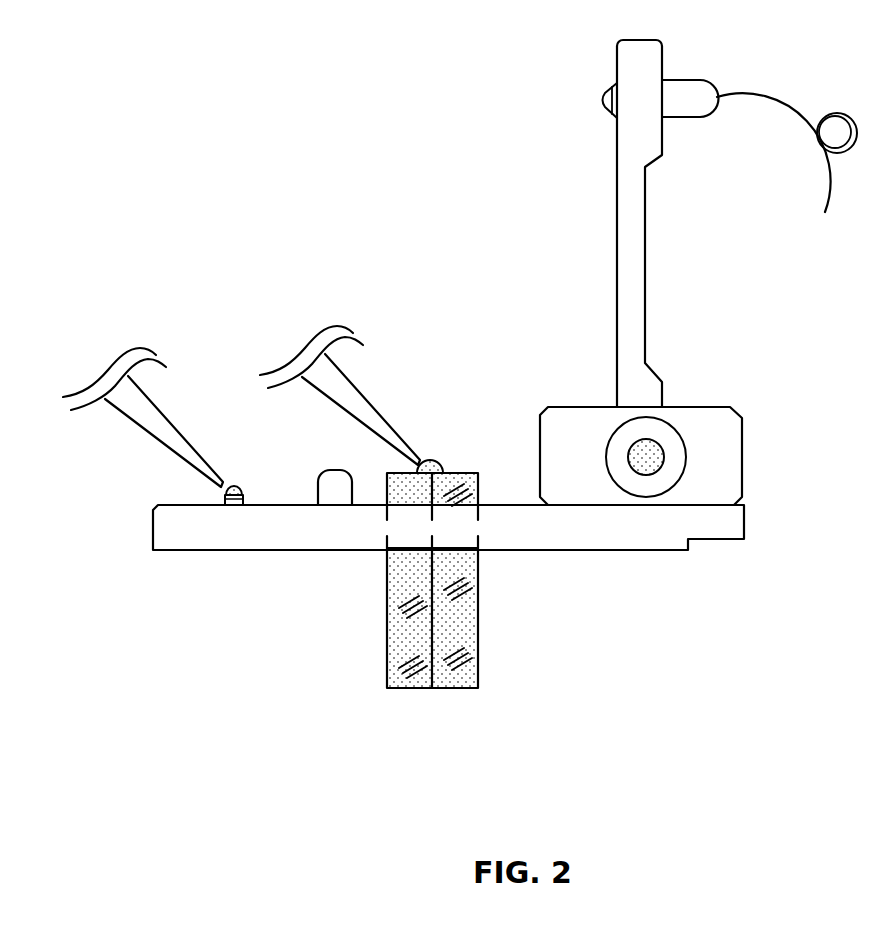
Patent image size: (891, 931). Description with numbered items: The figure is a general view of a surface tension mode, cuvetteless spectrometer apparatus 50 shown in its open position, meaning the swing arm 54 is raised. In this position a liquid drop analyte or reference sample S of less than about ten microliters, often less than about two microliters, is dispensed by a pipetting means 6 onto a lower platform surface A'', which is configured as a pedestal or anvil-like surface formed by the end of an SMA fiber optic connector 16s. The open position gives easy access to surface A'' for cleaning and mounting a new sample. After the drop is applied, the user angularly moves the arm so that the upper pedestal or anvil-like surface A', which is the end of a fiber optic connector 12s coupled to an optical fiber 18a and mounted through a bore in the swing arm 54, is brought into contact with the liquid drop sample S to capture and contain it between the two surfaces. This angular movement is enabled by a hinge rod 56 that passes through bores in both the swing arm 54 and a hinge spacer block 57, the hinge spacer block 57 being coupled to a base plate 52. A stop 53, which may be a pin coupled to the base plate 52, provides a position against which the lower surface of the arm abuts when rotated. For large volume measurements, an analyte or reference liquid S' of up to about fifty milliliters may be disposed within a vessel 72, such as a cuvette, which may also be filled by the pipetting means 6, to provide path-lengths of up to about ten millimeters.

The spectrometer apparatus 50 is at (181, 202).
The pipetting means 6 is at (245, 371).
The SMA fiber optic connector 16s is at (225, 498).
The liquid drop sample S is at (253, 473).
The analyte sample S' is at (453, 447).
The upper pedestal surface A' is at (573, 100).
The lower platform surface A'' is at (275, 493).
The stop 53 is at (346, 502).
The vessel 72 is at (417, 502).
The base plate 52 is at (556, 550).
The swing arm 54 is at (646, 307).
The hinge rod 56 is at (650, 451).
The hinge spacer block 57 is at (737, 477).
The SMA fiber optic connector 12s is at (705, 117).
The optical fiber 18a is at (757, 98).